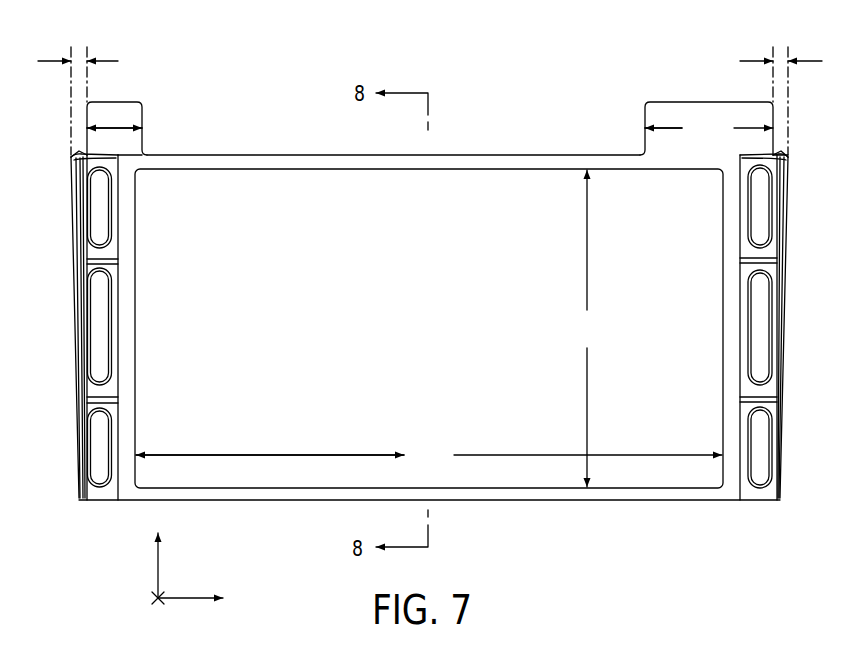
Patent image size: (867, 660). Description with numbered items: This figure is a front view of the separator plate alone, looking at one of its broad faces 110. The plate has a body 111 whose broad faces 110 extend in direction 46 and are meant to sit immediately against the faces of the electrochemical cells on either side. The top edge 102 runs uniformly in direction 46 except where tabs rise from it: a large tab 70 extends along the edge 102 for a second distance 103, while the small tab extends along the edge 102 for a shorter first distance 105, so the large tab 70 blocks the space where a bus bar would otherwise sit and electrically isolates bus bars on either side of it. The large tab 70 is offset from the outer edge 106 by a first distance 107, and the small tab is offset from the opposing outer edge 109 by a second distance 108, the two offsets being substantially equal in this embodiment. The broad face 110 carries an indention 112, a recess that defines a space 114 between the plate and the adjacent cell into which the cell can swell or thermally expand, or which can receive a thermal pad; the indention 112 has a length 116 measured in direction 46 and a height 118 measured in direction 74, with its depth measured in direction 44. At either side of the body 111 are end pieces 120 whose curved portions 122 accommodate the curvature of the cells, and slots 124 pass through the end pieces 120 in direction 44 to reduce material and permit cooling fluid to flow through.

The edge 102 is at (495, 155).
The second distance 103 is at (709, 128).
The first distance 105 is at (115, 128).
The outer edge 106 is at (785, 288).
The first distance 107 is at (112, 61).
The second distance 108 is at (749, 61).
The opposing outer edge 109 is at (74, 275).
The face 110 is at (125, 183).
The body 111 is at (462, 150).
The indention 112 is at (273, 187).
The space 114 is at (330, 197).
The length 116 is at (429, 455).
The height 118 is at (587, 328).
The end piece 120 is at (68, 152).
The curved portion 122 is at (113, 195).
The slot 124 is at (103, 218).
The large tab 70 is at (107, 112).
The direction 74 is at (157, 572).
The direction 46 is at (185, 597).
The direction 44 is at (157, 610).